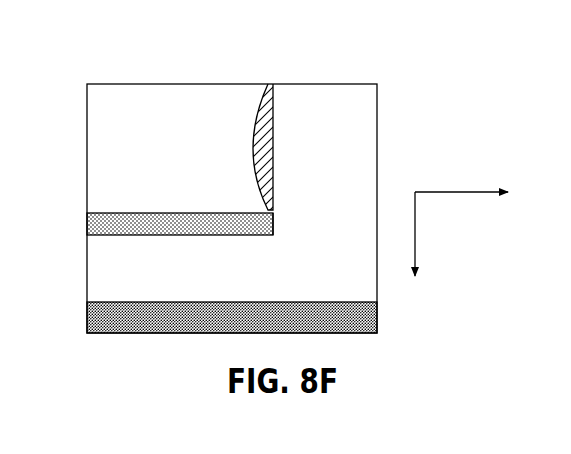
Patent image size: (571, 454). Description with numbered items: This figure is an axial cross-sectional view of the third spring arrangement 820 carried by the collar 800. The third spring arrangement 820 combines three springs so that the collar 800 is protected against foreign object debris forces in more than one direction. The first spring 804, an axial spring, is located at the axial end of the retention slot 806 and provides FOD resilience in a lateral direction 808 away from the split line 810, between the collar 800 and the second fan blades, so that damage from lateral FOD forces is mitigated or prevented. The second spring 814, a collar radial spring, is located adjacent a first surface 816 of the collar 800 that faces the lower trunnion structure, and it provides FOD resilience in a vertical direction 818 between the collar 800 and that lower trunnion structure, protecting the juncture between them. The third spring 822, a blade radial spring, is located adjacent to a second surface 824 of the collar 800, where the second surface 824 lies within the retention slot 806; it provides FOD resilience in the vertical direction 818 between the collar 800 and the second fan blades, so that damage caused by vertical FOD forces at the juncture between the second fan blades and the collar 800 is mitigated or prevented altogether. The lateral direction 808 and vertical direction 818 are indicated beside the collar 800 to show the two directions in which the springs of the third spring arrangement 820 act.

The collar 800 is at (191, 53).
The first spring 804 is at (271, 158).
The retention slot 806 is at (107, 180).
The lateral direction 808 is at (460, 191).
The split line 810 is at (86, 165).
The second spring 814 is at (358, 320).
The first surface 816 is at (192, 300).
The vertical direction 818 is at (418, 238).
The third spring arrangement 820 is at (292, 147).
The third spring 822 is at (263, 225).
The second surface 824 is at (165, 215).